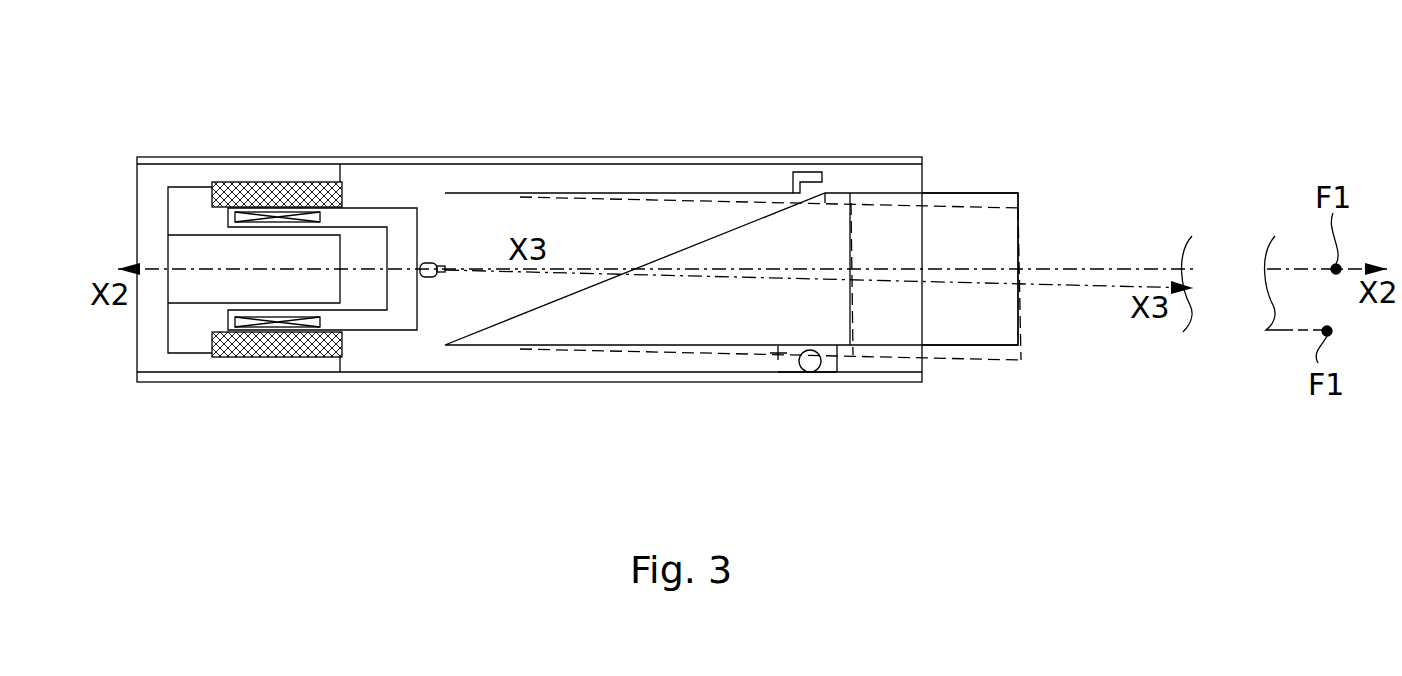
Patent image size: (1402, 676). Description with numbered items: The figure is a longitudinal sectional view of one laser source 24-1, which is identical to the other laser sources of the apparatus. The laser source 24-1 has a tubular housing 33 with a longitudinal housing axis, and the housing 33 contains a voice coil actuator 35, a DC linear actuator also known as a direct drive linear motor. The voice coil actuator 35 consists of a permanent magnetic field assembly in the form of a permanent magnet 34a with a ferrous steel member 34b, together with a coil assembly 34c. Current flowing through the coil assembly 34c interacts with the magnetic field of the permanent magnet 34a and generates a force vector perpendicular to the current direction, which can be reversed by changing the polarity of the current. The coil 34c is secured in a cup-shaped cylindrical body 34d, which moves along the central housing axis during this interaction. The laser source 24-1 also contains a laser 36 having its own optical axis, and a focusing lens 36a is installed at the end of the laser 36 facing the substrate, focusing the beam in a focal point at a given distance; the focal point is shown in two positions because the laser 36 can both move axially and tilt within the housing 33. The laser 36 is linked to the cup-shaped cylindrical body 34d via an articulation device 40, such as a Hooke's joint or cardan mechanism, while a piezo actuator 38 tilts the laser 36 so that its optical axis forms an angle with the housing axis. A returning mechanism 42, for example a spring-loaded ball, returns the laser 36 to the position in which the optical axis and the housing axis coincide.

The laser source 24-1 is at (697, 138).
The tubular housing 33 is at (570, 383).
The permanent magnet 34a is at (296, 188).
The ferrous steel member 34b is at (158, 172).
The coil assembly 34c is at (275, 328).
The cup-shaped cylindrical body 34d is at (400, 316).
The voice coil actuator 35 is at (237, 148).
The laser 36 is at (729, 354).
The focusing lens 36a is at (995, 193).
The piezo actuator 38 is at (812, 374).
The articulation device 40 is at (430, 262).
The returning mechanism 42 is at (812, 172).